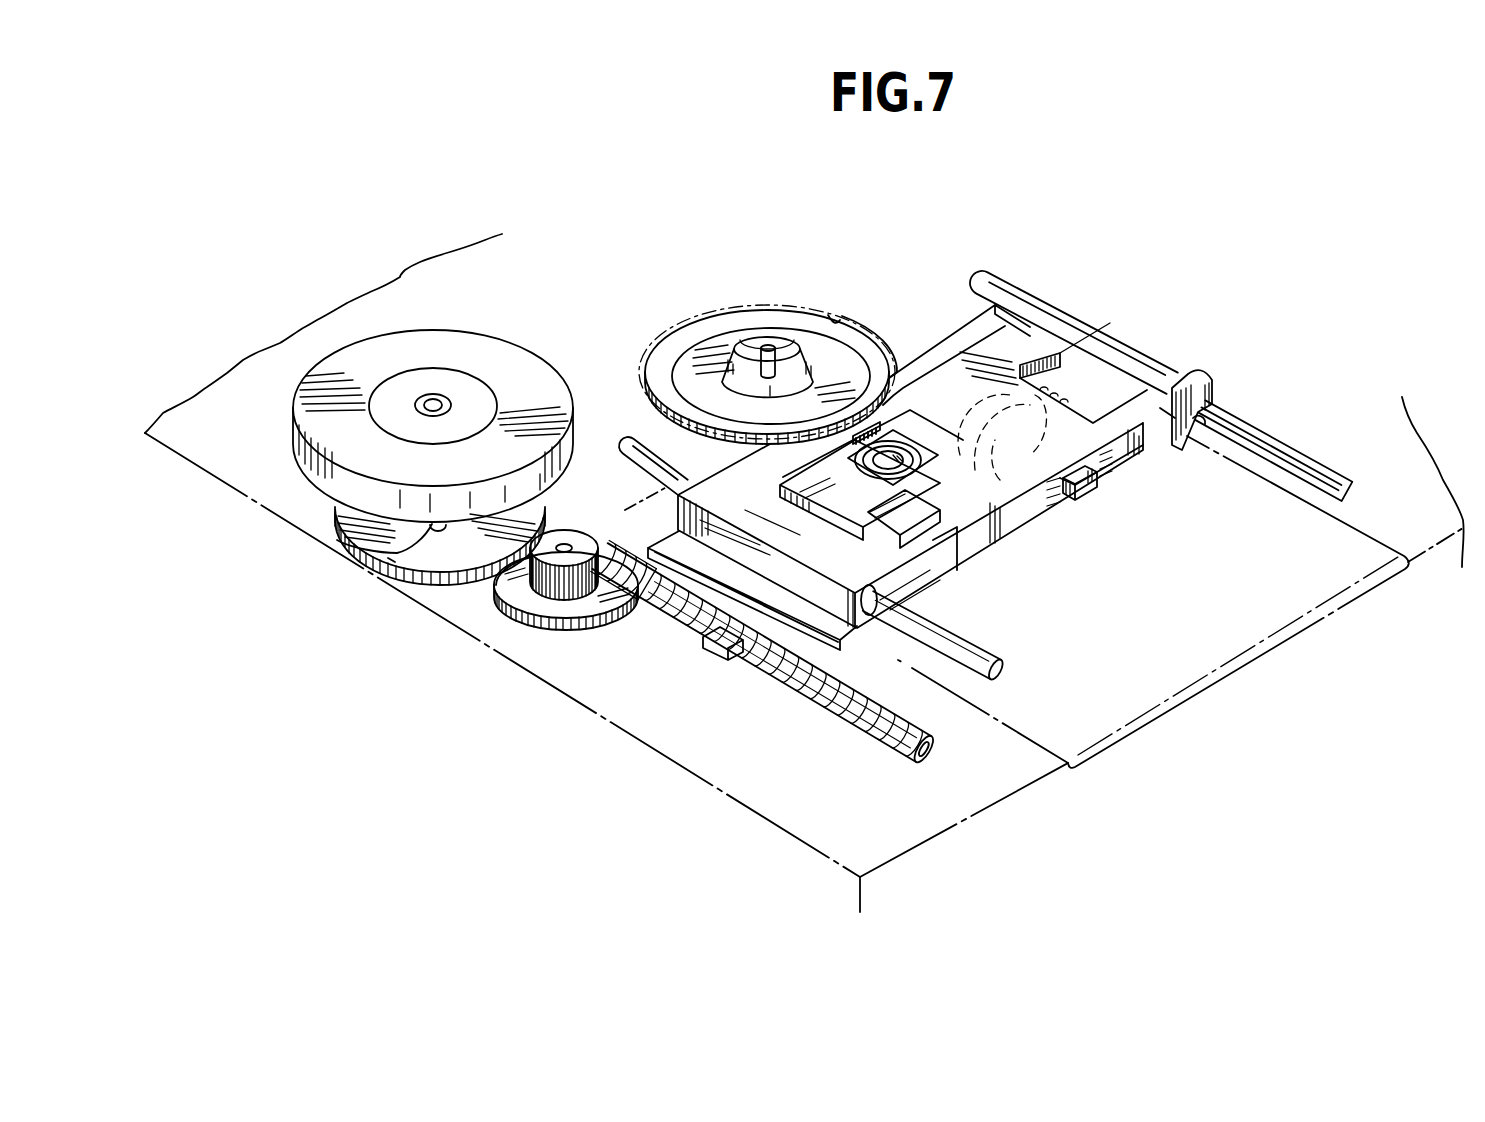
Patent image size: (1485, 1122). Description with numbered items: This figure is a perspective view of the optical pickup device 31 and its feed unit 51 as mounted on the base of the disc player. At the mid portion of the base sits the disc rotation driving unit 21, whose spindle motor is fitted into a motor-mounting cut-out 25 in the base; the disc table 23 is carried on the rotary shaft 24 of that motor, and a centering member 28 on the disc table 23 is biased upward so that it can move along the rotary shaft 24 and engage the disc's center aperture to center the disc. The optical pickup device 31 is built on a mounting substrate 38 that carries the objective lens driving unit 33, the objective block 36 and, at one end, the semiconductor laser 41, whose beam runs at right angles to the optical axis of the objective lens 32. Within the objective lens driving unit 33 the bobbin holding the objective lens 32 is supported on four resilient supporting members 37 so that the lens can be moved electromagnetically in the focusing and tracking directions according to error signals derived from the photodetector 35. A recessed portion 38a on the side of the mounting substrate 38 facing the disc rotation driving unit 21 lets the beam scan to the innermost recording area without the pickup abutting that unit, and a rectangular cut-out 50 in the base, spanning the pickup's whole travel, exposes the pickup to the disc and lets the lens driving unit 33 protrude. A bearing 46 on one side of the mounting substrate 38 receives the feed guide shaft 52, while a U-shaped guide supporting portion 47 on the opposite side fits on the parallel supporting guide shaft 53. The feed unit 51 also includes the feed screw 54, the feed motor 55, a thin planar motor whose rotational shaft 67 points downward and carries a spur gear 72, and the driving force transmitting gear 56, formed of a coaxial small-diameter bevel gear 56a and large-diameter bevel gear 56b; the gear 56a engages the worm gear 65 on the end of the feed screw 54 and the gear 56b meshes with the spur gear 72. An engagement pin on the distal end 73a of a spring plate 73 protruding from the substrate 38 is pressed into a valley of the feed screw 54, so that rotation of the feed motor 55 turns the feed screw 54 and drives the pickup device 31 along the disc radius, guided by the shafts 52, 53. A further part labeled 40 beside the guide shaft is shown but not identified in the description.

The disc rotation driving unit 21 is at (679, 322).
The disc table 23 is at (723, 337).
The rotary shaft 24 is at (770, 347).
The cut-out 25 is at (840, 320).
The centering member 28 is at (747, 343).
The optical pickup device 31 is at (1036, 540).
The objective lens 32 is at (910, 463).
The objective lens driving unit 33 is at (943, 447).
The photodetector 35 is at (1090, 483).
The objective block 36 is at (1110, 452).
The resilient supporting members 37 is at (856, 470).
The mounting substrate 38 is at (1025, 343).
The recessed portion 38a is at (867, 367).
The slider block 40 is at (1193, 377).
The semiconductor laser 41 is at (1117, 335).
The bearing 46 is at (863, 622).
The guide supporting portion 47 is at (1200, 427).
The cut-out 50 is at (1380, 570).
The feed unit 51 is at (553, 637).
The feed guide shaft 52 is at (983, 677).
The supporting guide shaft 53 is at (1293, 457).
The feed screw 54 is at (805, 683).
The feed motor 55 is at (468, 343).
The driving force transmitting gear 56 is at (522, 608).
The small-diameter bevel gear 56a is at (497, 590).
The large-diameter bevel gear 56b is at (593, 620).
The worm gear 65 is at (612, 595).
The rotational shaft 67 is at (388, 558).
The spur gear 72 is at (388, 585).
The spring plate 73 is at (775, 667).
The distal end 73a is at (716, 641).